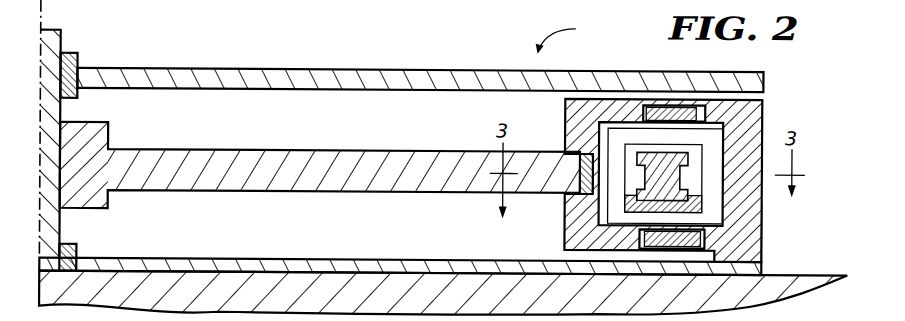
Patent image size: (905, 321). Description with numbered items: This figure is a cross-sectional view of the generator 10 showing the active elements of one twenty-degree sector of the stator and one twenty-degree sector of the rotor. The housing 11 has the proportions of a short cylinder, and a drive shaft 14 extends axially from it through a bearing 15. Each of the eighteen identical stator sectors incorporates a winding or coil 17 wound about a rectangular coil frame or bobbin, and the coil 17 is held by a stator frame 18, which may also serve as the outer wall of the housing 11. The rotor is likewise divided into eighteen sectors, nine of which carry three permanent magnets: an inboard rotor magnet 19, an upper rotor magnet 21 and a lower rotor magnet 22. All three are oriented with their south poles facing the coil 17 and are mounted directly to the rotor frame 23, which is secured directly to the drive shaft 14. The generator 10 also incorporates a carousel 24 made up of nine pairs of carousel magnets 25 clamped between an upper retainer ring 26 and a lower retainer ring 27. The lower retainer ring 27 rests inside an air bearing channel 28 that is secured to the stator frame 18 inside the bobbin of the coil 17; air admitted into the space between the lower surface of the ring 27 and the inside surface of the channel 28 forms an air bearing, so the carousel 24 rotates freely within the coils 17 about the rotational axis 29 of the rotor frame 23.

The generator 10 is at (570, 37).
The housing 11 is at (333, 77).
The drive shaft 14 is at (55, 45).
The bearing 15 is at (78, 64).
The coil 17 is at (760, 105).
The stator frame 18 is at (750, 243).
The inboard rotor magnet 19 is at (580, 163).
The upper rotor magnet 21 is at (675, 108).
The lower rotor magnet 22 is at (658, 244).
The rotor frame 23 is at (322, 179).
The carousel 24 is at (645, 164).
The carousel magnets 25 is at (636, 195).
The upper retainer ring 26 is at (648, 146).
The lower retainer ring 27 is at (690, 185).
The air bearing channel 28 is at (622, 211).
The rotational axis 29 is at (44, 17).